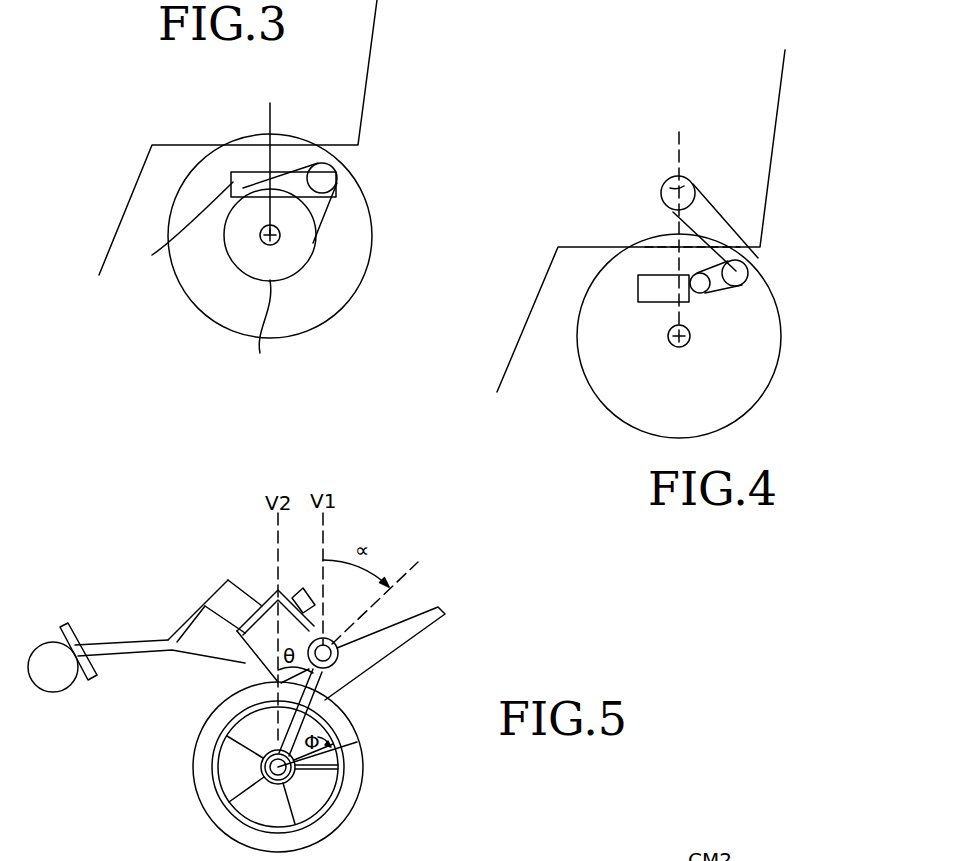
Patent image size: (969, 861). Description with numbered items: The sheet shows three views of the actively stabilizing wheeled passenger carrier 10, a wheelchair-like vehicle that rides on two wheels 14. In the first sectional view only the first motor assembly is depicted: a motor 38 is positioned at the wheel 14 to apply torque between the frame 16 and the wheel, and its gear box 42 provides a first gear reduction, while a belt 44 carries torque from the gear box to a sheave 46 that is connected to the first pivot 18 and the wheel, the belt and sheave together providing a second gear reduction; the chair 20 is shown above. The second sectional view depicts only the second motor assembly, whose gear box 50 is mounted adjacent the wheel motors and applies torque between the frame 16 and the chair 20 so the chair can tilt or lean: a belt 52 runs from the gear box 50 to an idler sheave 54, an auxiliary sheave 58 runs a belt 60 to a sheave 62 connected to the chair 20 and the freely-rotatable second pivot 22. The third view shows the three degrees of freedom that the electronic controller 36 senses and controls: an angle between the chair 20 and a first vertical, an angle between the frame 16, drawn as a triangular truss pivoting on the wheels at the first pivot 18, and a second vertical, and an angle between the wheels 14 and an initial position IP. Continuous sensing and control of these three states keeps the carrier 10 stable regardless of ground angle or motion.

In FIG. 5, the wheeled passenger carrier 10 is at (222, 553).
In FIG. 3, the wheels 14 is at (367, 270).
In FIG. 4, the wheels 14 is at (777, 365).
In FIG. 5, the wheels 14 is at (348, 818).
In FIG. 3, the frame 16 is at (268, 162).
In FIG. 4, the frame 16 is at (672, 255).
In FIG. 5, the frame 16 is at (313, 698).
In FIG. 3, the first pivot 18 is at (297, 252).
In FIG. 4, the first pivot 18 is at (680, 347).
In FIG. 5, the first pivot 18 is at (295, 767).
In FIG. 3, the chair 20 is at (375, 32).
In FIG. 4, the chair 20 is at (775, 138).
In FIG. 5, the chair 20 is at (413, 640).
In FIG. 4, the second pivot 22 is at (673, 193).
In FIG. 5, the second pivot 22 is at (343, 648).
In FIG. 5, the electronic controller 36 is at (307, 597).
In FIG. 3, the motor 38 is at (177, 231).
In FIG. 3, the gear box 42 is at (327, 177).
In FIG. 4, the gear box 42 is at (653, 295).
In FIG. 3, the belt 44 is at (330, 217).
In FIG. 3, the sheave 46 is at (257, 332).
In FIG. 4, the gear box 50 is at (697, 295).
In FIG. 4, the belt 52 is at (720, 292).
In FIG. 4, the idler sheave 54 is at (753, 270).
In FIG. 4, the auxiliary sheave 58 is at (783, 262).
In FIG. 4, the belt 60 is at (720, 220).
In FIG. 4, the sheave 62 is at (687, 177).
In FIG. 5, the initial position IP is at (357, 742).